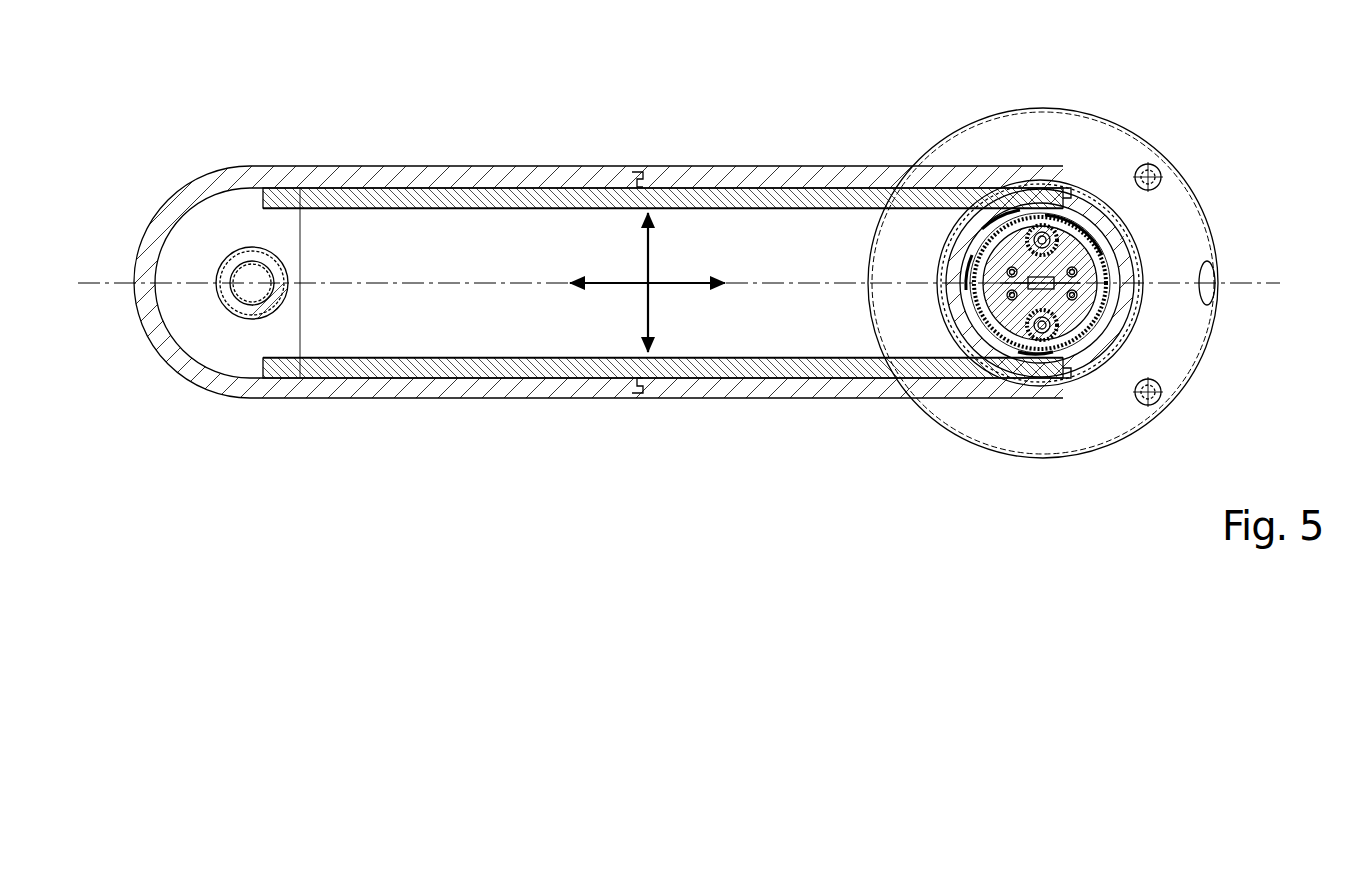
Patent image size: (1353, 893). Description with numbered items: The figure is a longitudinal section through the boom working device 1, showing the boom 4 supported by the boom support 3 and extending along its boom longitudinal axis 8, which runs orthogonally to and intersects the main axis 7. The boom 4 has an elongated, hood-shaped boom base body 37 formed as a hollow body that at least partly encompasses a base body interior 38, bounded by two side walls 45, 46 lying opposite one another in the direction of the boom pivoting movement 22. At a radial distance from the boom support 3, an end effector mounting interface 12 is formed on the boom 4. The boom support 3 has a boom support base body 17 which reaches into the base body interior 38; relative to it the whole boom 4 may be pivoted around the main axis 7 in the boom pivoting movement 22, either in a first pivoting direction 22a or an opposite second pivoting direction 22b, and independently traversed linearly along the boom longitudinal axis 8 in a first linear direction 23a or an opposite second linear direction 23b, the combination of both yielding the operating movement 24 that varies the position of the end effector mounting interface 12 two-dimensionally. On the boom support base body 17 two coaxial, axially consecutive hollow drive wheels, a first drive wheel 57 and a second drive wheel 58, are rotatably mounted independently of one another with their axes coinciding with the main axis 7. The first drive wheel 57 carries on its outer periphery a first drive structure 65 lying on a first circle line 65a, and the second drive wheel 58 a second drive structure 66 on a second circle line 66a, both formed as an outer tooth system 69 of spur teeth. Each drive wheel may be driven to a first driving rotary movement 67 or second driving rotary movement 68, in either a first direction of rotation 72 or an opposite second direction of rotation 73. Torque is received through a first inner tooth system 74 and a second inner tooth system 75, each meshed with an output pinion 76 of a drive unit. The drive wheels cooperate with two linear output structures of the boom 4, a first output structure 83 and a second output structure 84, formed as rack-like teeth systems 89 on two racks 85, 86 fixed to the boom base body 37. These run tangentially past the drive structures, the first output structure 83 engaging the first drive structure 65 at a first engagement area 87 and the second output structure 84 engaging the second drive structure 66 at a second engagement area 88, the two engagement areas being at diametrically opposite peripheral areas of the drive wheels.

The boom working device 1 is at (1228, 184).
The boom support 3 is at (1138, 240).
The boom 4 is at (400, 170).
The main axis 7 is at (1105, 215).
The boom longitudinal axis 8 is at (443, 288).
The end effector mounting interface 12 is at (243, 298).
The boom support base body 17 is at (1110, 300).
The boom pivoting movement 22 is at (650, 268).
The first pivoting direction 22a is at (648, 330).
The second pivoting direction 22b is at (645, 240).
The first linear direction 23a is at (695, 286).
The second linear direction 23b is at (598, 286).
The operating movement 24 is at (648, 300).
The boom base body 37 is at (312, 175).
The base body interior 38 is at (486, 236).
The side wall 45 is at (367, 175).
The side wall 46 is at (328, 386).
The first drive wheel 57 is at (1090, 355).
The second drive wheel 58 is at (1112, 205).
The first drive structure 65 is at (1105, 315).
The first circle line 65a is at (1010, 355).
The second drive structure 66 is at (1127, 235).
The second circle line 66a is at (1010, 212).
The first driving rotary movement 67 is at (956, 350).
The second driving rotary movement 68 is at (955, 215).
The outer tooth system 69 is at (1122, 238).
The first direction of rotation 72 is at (936, 296).
The second direction of rotation 73 is at (936, 270).
The first inner tooth system 74 is at (1107, 297).
The second inner tooth system 75 is at (1120, 256).
The output pinion 76 is at (1042, 224).
The first output structure 83 is at (480, 366).
The second output structure 84 is at (543, 204).
The rack 85 is at (383, 373).
The rack 86 is at (458, 175).
The first engagement area 87 is at (1066, 184).
The second engagement area 88 is at (1067, 394).
The rack-like teeth system 89 is at (356, 210).